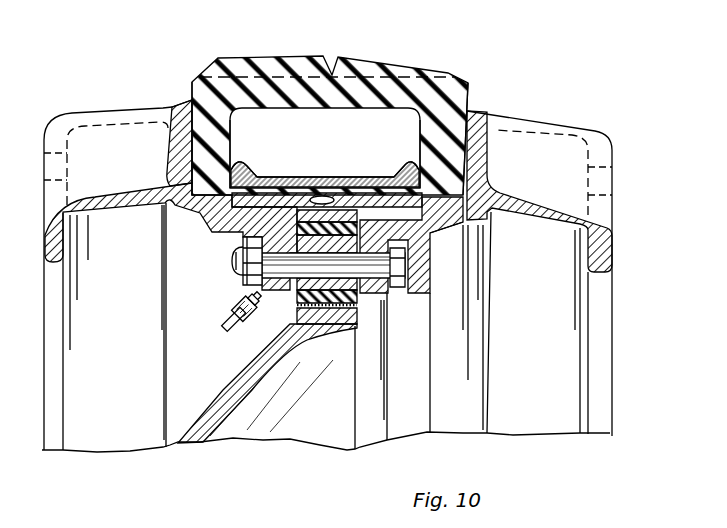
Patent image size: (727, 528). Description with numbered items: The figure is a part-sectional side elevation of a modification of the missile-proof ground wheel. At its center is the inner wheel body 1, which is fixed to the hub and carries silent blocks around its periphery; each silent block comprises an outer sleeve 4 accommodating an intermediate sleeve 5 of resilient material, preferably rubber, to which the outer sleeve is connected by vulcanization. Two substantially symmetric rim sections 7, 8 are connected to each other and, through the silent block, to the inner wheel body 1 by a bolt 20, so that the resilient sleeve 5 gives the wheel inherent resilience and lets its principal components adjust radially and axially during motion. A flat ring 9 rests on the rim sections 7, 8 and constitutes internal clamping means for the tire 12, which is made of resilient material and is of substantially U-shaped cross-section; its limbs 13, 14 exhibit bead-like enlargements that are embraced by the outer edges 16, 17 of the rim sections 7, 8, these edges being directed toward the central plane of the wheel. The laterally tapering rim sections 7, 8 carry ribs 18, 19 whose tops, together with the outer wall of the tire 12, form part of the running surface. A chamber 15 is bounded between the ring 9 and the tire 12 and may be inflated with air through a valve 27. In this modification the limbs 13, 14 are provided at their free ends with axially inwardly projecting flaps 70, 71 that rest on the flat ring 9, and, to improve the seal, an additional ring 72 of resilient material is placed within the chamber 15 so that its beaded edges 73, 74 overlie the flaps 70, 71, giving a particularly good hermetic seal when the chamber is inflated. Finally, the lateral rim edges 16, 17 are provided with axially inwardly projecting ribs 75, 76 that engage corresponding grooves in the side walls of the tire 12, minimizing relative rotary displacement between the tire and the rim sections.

The inner wheel body 1 is at (255, 385).
The sleeve 4 is at (300, 305).
The intermediate sleeve 5 is at (334, 326).
The rim section 7 is at (212, 212).
The rim section 8 is at (440, 220).
The ring 9 is at (423, 237).
The tire 12 is at (388, 95).
The limb 13 is at (224, 128).
The limb 14 is at (426, 129).
The chamber 15 is at (324, 137).
The outer edge 16 is at (172, 122).
The outer edge 17 is at (482, 128).
The rib 18 is at (110, 118).
The rib 19 is at (545, 132).
The bolt 20 is at (402, 290).
The valve 27 is at (236, 310).
The flap 70 is at (268, 178).
The flap 71 is at (372, 178).
The additional ring 72 is at (308, 178).
The beaded edge 73 is at (240, 168).
The beaded edge 74 is at (404, 168).
The rib 75 is at (192, 80).
The rib 76 is at (466, 88).